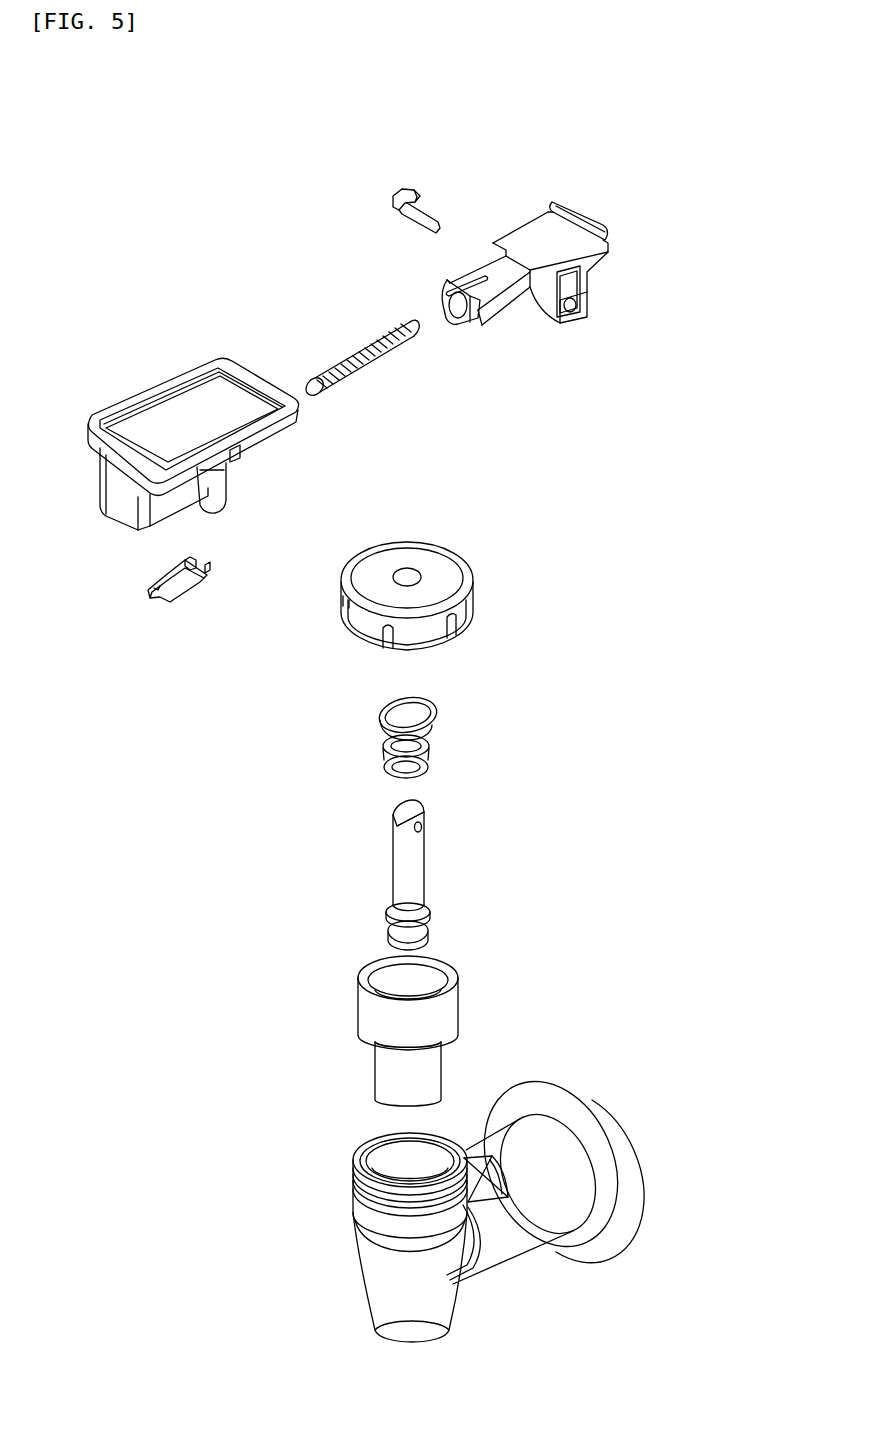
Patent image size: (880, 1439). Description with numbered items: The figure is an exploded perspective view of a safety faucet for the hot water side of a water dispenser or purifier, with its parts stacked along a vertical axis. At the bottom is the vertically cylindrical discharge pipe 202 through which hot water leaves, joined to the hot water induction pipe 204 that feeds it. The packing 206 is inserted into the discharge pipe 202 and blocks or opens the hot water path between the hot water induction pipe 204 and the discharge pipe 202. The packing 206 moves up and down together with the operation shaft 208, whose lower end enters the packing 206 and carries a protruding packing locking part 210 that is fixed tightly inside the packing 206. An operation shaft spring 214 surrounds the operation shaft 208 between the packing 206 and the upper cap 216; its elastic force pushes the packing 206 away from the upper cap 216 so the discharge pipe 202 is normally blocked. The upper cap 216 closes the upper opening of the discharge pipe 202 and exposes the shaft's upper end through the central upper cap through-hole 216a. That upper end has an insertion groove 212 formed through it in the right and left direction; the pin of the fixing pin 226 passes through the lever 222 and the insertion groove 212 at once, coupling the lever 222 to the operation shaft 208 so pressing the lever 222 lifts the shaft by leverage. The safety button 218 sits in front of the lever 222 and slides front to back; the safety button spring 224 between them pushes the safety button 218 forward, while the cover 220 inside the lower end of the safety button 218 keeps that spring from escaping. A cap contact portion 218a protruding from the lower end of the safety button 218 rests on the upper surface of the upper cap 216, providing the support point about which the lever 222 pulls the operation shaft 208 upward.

The discharge pipe 202 is at (370, 1272).
The hot water induction pipe 204 is at (555, 1175).
The packing 206 is at (388, 1057).
The operation shaft 208 is at (398, 862).
The packing locking part 210 is at (430, 918).
The insertion groove 212 is at (420, 818).
The operation shaft spring 214 is at (437, 712).
The upper cap 216 is at (475, 598).
The upper cap through-hole 216a is at (410, 575).
The safety button 218 is at (180, 410).
The cap contact portion 218a is at (215, 493).
The cover 220 is at (150, 578).
The lever 222 is at (515, 230).
The safety button spring 224 is at (352, 355).
The fixing pin 226 is at (413, 183).